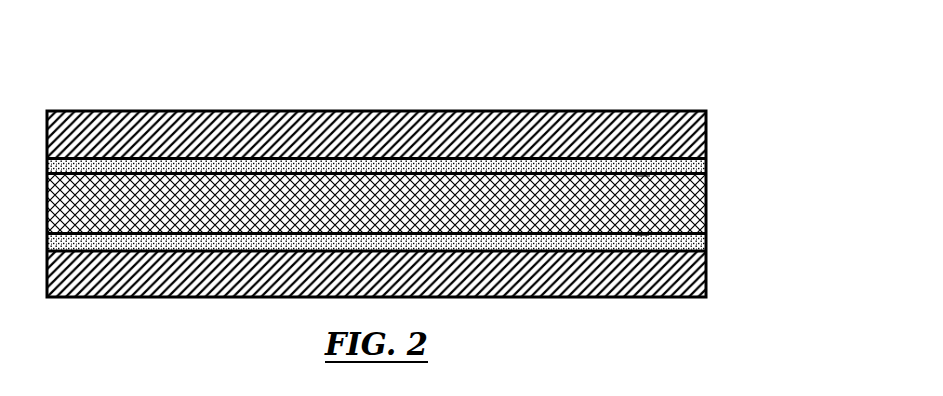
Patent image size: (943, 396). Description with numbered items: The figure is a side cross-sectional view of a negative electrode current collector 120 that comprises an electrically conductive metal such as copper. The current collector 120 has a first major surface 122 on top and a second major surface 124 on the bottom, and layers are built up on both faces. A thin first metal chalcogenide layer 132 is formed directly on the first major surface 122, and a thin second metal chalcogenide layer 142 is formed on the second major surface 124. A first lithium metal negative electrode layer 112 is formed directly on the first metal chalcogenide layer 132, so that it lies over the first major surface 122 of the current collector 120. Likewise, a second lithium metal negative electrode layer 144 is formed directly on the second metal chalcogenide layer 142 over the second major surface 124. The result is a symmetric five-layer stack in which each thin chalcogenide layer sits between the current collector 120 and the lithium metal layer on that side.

The first lithium metal negative electrode layer 112 is at (706, 123).
The first metal chalcogenide layer 132 is at (706, 165).
The negative electrode current collector 120 is at (706, 205).
The second metal chalcogenide layer 142 is at (706, 240).
The second lithium metal negative electrode layer 144 is at (706, 285).
The first major surface 122 is at (643, 176).
The second major surface 124 is at (642, 235).